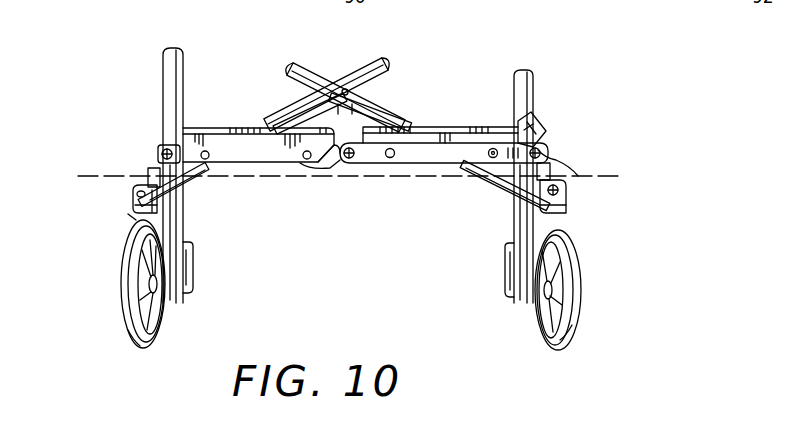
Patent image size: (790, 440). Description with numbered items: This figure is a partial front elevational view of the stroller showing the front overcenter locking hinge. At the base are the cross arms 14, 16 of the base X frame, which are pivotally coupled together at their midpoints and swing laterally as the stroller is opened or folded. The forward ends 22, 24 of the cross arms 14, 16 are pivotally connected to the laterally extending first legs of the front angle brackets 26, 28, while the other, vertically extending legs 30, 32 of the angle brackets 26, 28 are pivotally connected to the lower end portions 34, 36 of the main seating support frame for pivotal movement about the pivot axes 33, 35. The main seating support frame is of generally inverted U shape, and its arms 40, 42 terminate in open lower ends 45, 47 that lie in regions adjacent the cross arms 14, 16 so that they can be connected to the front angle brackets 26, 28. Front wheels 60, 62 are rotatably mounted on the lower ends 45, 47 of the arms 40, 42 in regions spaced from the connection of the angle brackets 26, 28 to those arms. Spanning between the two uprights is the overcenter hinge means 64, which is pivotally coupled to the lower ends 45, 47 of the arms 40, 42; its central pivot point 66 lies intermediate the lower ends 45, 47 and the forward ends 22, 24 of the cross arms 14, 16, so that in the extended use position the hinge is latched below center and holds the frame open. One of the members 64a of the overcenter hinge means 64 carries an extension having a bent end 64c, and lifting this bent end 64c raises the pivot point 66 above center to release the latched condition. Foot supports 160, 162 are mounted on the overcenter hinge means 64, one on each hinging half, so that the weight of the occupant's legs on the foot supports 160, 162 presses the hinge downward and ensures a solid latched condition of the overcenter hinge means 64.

The cross arm 14 is at (379, 52).
The cross arm 16 is at (307, 58).
The forward end of cross arm 22 is at (193, 188).
The forward end of cross arm 24 is at (512, 193).
The front angle bracket 26 is at (113, 216).
The front angle bracket 28 is at (574, 200).
The vertically extending leg of angle bracket 30 is at (150, 178).
The vertically extending leg of angle bracket 32 is at (577, 148).
The pivot axis 33 is at (127, 175).
The lower end portion of main seating support frame 34 is at (178, 211).
The pivot axis 35 is at (578, 177).
The lower end portion of main seating support frame 36 is at (524, 213).
The arm of main seating support frame 40 is at (169, 88).
The arm of main seating support frame 42 is at (524, 81).
The lower end of arm 45 is at (194, 292).
The lower end of arm 47 is at (522, 301).
The front wheel 60 is at (130, 334).
The front wheel 62 is at (567, 343).
The overcenter hinge means 64 is at (467, 152).
The member of overcenter hinge means 64a is at (320, 164).
The bent end 64c is at (533, 119).
The pivot point 66 is at (352, 163).
The foot support 160 is at (436, 127).
The foot support 162 is at (257, 127).